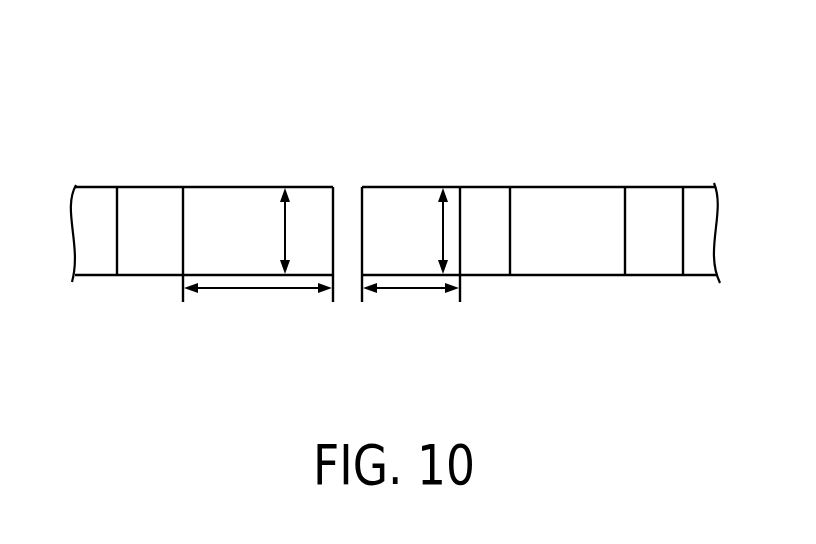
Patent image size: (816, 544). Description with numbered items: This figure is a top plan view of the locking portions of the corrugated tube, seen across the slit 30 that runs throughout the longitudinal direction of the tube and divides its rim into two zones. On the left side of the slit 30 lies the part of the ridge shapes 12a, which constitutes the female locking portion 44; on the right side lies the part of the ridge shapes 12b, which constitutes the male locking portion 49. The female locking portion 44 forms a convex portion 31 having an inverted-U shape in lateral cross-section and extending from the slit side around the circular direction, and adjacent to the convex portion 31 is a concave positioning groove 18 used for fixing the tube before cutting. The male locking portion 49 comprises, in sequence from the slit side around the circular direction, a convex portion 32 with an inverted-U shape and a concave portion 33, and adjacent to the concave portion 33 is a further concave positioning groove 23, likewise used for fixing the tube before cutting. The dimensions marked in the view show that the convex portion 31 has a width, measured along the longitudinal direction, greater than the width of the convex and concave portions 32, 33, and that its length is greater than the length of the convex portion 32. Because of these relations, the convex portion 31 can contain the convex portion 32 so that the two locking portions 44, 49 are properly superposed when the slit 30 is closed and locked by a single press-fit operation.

The part of the ridge shapes 12a is at (203, 185).
The part of the ridge shapes 12b is at (570, 185).
The concave positioning groove 18 is at (128, 203).
The concave positioning groove 23 is at (664, 194).
The slit 30 is at (350, 263).
The convex portion 31 is at (268, 192).
The convex portion 32 is at (395, 193).
The concave portion 33 is at (483, 194).
The female locking portion 44 is at (252, 94).
The male locking portion 49 is at (463, 94).